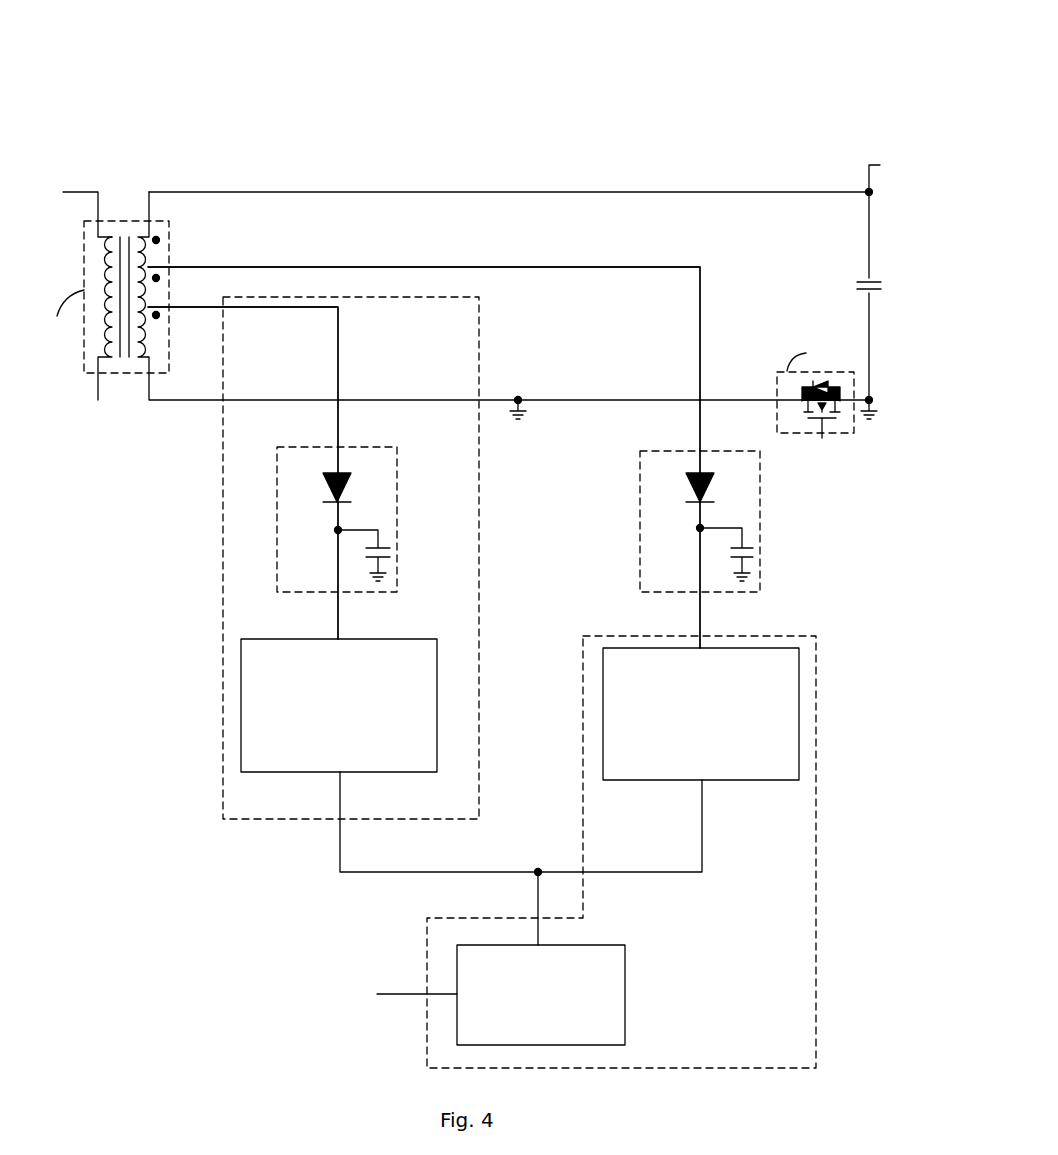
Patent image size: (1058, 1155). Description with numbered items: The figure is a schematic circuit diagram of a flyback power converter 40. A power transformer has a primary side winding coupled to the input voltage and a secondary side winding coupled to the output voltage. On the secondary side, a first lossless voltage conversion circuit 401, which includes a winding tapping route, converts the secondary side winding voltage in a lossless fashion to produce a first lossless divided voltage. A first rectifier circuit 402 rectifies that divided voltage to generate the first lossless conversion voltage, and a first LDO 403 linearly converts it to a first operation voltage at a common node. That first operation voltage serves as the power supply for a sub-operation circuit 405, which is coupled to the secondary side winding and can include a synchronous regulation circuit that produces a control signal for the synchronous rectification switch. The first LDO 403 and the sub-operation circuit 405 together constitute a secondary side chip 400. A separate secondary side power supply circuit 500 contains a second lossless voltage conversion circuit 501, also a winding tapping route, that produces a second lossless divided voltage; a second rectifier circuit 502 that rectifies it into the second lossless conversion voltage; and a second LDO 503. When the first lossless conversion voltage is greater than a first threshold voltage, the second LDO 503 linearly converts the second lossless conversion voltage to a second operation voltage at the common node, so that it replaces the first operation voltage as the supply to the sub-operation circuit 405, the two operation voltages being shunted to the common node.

The flyback power converter 40 is at (78, 53).
The secondary side chip 400 is at (482, 667).
The first lossless voltage conversion circuit 401 is at (540, 267).
The first rectifier circuit 402 is at (700, 521).
The first LDO 403 is at (701, 674).
The sub-operation circuit 405 is at (499, 908).
The secondary side power supply circuit 500 is at (313, 558).
The second lossless voltage conversion circuit 501 is at (239, 310).
The second rectifier circuit 502 is at (337, 519).
The second LDO 503 is at (339, 671).